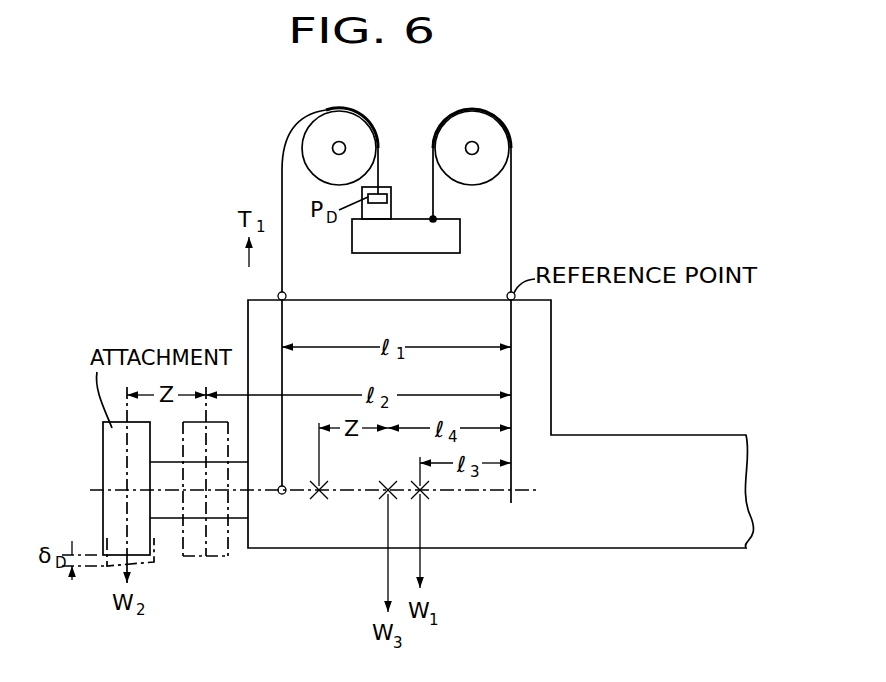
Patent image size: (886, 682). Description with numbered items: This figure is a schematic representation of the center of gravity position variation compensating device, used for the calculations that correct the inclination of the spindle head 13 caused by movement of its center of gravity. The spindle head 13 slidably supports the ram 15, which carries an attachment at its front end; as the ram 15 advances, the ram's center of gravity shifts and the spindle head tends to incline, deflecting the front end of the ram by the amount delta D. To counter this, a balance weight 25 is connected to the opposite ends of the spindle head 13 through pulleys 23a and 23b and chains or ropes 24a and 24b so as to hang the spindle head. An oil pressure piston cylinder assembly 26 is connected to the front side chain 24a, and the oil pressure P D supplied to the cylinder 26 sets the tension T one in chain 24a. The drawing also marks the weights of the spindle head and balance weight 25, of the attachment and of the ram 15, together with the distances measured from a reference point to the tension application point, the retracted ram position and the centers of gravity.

The spindle head 13 is at (542, 349).
The ram 15 is at (167, 508).
The pulley 23a is at (318, 133).
The pulley 23b is at (506, 141).
The chain 24a is at (282, 180).
The chain 24b is at (511, 182).
The balance weight 25 is at (460, 238).
The piston cylinder assembly 26 is at (388, 187).